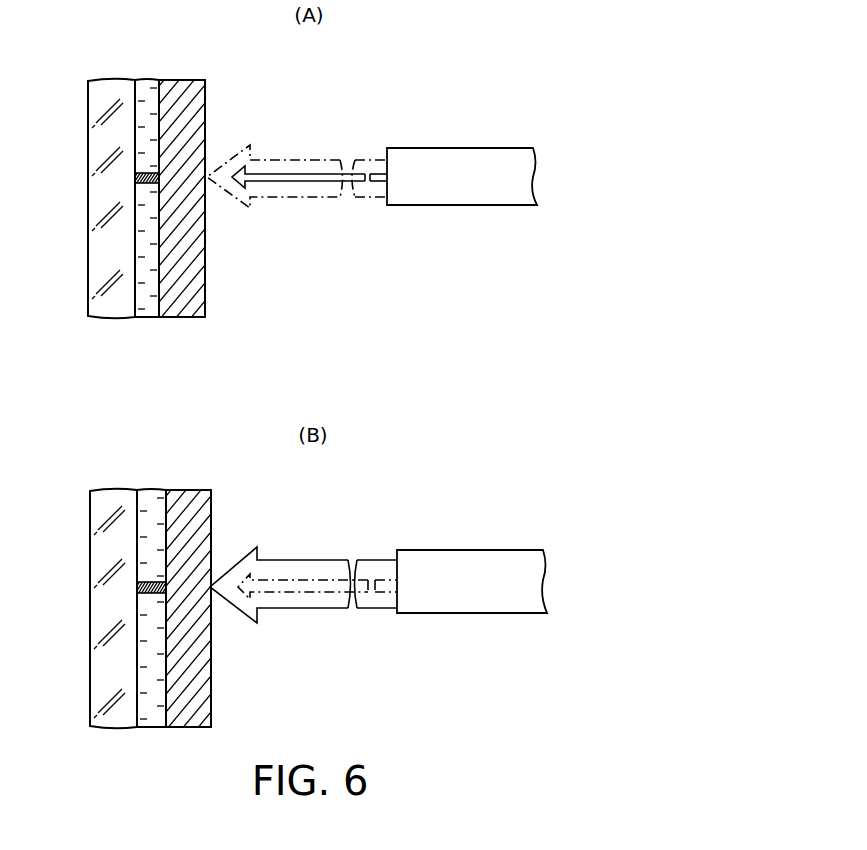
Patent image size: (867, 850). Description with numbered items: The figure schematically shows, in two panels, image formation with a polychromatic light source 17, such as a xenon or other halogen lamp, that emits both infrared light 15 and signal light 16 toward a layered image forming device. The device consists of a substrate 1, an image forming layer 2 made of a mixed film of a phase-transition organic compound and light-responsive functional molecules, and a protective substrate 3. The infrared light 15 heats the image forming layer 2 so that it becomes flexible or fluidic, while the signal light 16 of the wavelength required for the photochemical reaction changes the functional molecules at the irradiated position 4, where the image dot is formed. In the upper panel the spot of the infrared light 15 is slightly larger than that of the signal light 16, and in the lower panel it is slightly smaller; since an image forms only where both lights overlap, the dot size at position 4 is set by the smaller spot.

The substrate 1 is at (180, 84).
The image forming layer 2 is at (146, 82).
The protective substrate 3 is at (110, 82).
The irradiated position 4 is at (135, 178).
The infrared light 15 is at (293, 158).
The signal light 16 is at (296, 182).
The polychromatic light source 17 is at (468, 147).